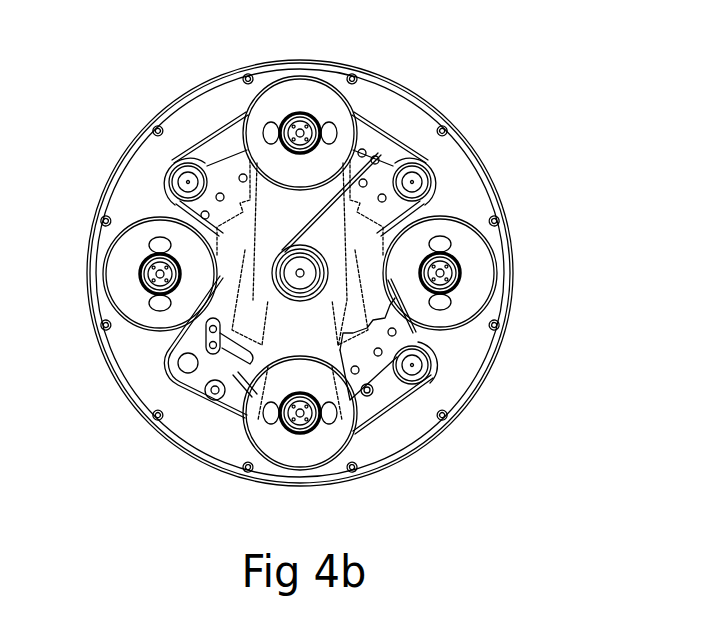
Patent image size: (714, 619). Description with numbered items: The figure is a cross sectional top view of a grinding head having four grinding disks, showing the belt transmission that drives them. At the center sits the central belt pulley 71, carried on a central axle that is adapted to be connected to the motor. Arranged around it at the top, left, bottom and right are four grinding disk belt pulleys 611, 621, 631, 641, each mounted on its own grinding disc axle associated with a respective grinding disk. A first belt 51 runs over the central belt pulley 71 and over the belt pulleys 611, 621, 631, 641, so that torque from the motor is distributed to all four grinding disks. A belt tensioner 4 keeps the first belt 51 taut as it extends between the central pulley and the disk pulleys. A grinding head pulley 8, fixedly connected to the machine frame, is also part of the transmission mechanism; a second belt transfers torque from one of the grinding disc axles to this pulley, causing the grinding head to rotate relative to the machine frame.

The belt tensioner 4 is at (123, 422).
The grinding head pulley 8 is at (392, 215).
The first belt 51 is at (375, 424).
The central belt pulley 71 is at (307, 263).
The belt pulley 611 is at (303, 97).
The belt pulley 621 is at (122, 262).
The belt pulley 631 is at (295, 455).
The belt pulley 641 is at (472, 270).